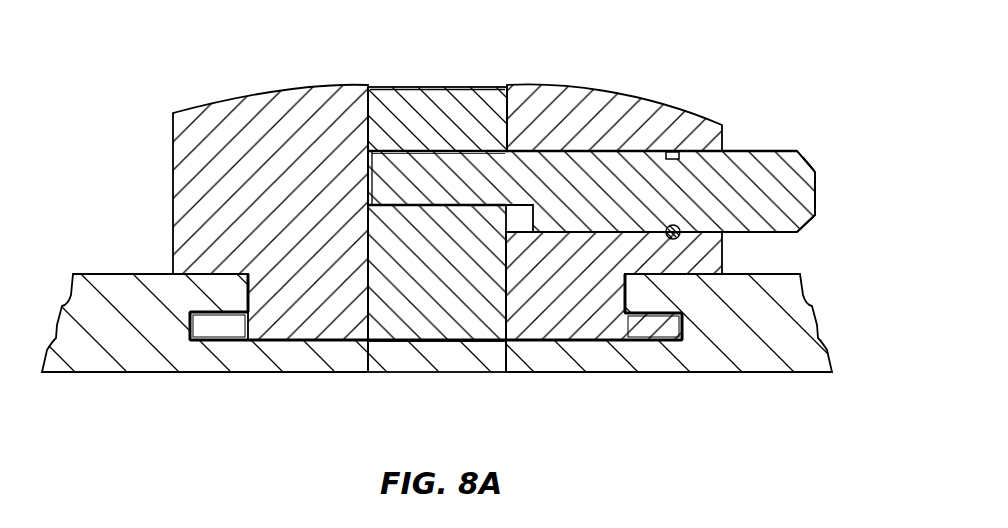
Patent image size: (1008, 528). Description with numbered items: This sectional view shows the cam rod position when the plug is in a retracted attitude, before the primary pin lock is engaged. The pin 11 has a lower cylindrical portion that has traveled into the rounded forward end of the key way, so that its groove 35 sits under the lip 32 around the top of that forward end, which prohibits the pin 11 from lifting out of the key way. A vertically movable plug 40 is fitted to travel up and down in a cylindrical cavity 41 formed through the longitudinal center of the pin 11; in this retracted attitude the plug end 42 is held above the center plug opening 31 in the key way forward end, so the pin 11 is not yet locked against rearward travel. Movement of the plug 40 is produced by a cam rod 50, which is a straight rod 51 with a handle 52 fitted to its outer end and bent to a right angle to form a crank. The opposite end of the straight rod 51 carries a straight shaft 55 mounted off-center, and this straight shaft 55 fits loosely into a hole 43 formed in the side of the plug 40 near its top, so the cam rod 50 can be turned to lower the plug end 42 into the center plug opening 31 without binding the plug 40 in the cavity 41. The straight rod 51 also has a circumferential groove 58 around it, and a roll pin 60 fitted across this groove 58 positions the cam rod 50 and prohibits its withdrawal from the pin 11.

The pin 11 is at (168, 177).
The center plug opening 31 is at (437, 337).
The lip 32 is at (224, 281).
The groove 35 is at (250, 297).
The plug 40 is at (413, 290).
The cylindrical cavity 41 is at (386, 87).
The plug end 42 is at (478, 343).
The hole 43 is at (444, 160).
The cam rod 50 is at (630, 136).
The straight rod 51 is at (578, 212).
The handle 52 is at (818, 203).
The straight shaft 55 is at (463, 178).
The circumferential groove 58 is at (673, 150).
The roll pin 60 is at (680, 240).